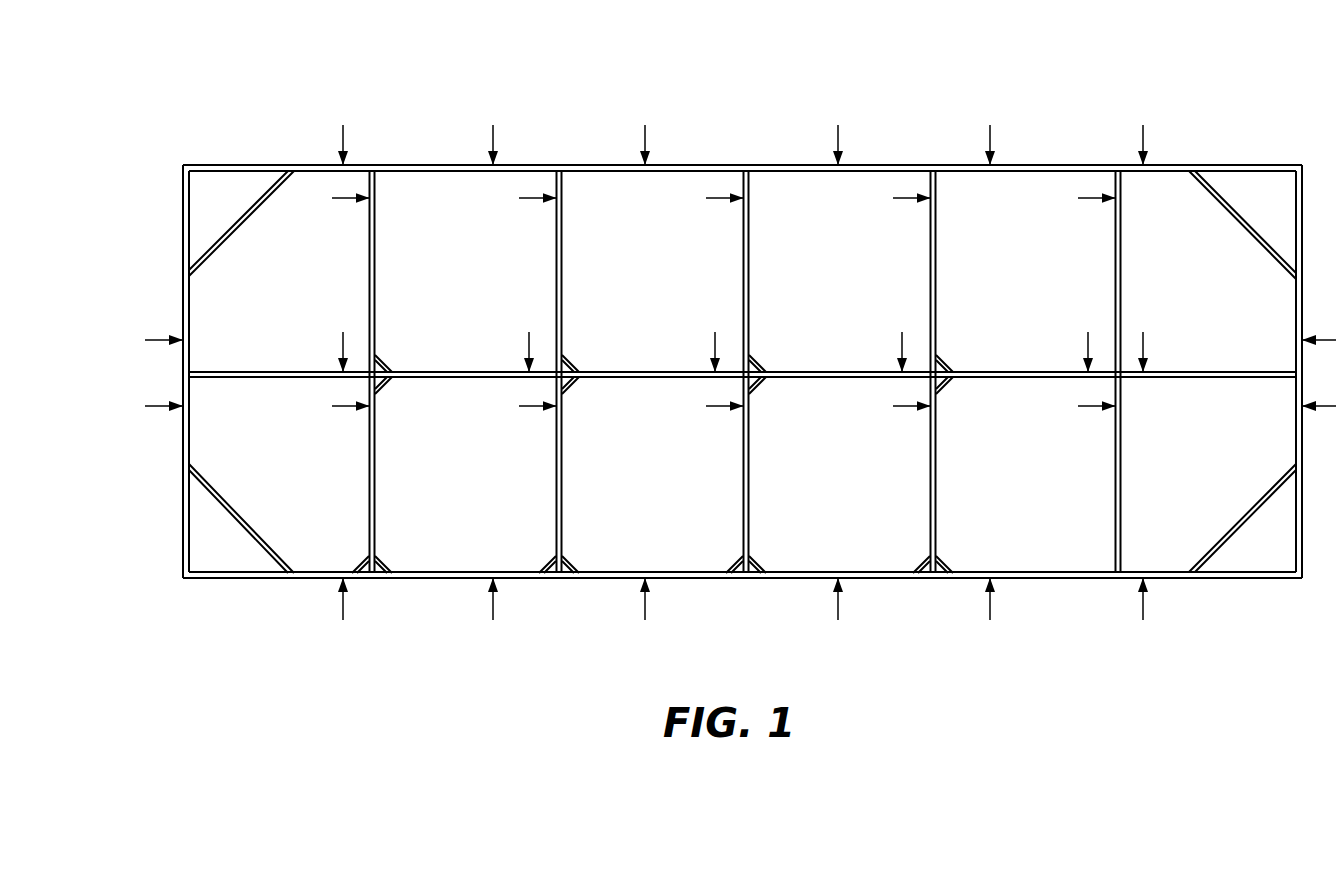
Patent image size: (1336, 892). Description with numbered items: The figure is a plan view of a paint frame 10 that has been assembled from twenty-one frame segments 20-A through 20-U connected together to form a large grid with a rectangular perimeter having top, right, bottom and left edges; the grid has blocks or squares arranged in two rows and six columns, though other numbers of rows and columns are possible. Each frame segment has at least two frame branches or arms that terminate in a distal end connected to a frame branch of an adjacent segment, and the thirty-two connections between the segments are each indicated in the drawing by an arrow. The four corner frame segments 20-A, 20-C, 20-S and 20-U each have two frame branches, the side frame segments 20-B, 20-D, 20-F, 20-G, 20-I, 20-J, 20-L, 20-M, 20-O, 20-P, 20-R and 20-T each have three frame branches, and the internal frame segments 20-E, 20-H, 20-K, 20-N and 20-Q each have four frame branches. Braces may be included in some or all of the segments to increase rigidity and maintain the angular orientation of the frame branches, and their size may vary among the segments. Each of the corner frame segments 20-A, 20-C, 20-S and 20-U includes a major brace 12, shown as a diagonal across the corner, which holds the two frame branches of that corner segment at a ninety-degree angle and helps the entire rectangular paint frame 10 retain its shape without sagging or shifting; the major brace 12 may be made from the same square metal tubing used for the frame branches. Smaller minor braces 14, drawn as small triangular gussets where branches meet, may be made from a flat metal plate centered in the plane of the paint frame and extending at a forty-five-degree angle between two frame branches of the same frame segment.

The paint frame 10 is at (170, 80).
The major brace 12 is at (237, 229).
The minor brace 14 is at (380, 366).
The corner frame segment 20-A is at (262, 165).
The side frame segment 20-B is at (262, 372).
The corner frame segment 20-C is at (260, 578).
The side frame segment 20-D is at (440, 165).
The internal frame segment 20-E is at (488, 372).
The side frame segment 20-F is at (438, 578).
The side frame segment 20-G is at (597, 165).
The internal frame segment 20-H is at (598, 372).
The side frame segment 20-I is at (596, 578).
The side frame segment 20-J is at (786, 165).
The internal frame segment 20-K is at (856, 372).
The side frame segment 20-L is at (779, 578).
The side frame segment 20-M is at (910, 165).
The internal frame segment 20-N is at (1045, 372).
The side frame segment 20-O is at (914, 578).
The side frame segment 20-P is at (1075, 165).
The internal frame segment 20-Q is at (1121, 297).
The side frame segment 20-R is at (1074, 578).
The corner frame segment 20-S is at (1250, 165).
The side frame segment 20-T is at (1253, 372).
The corner frame segment 20-U is at (1224, 578).